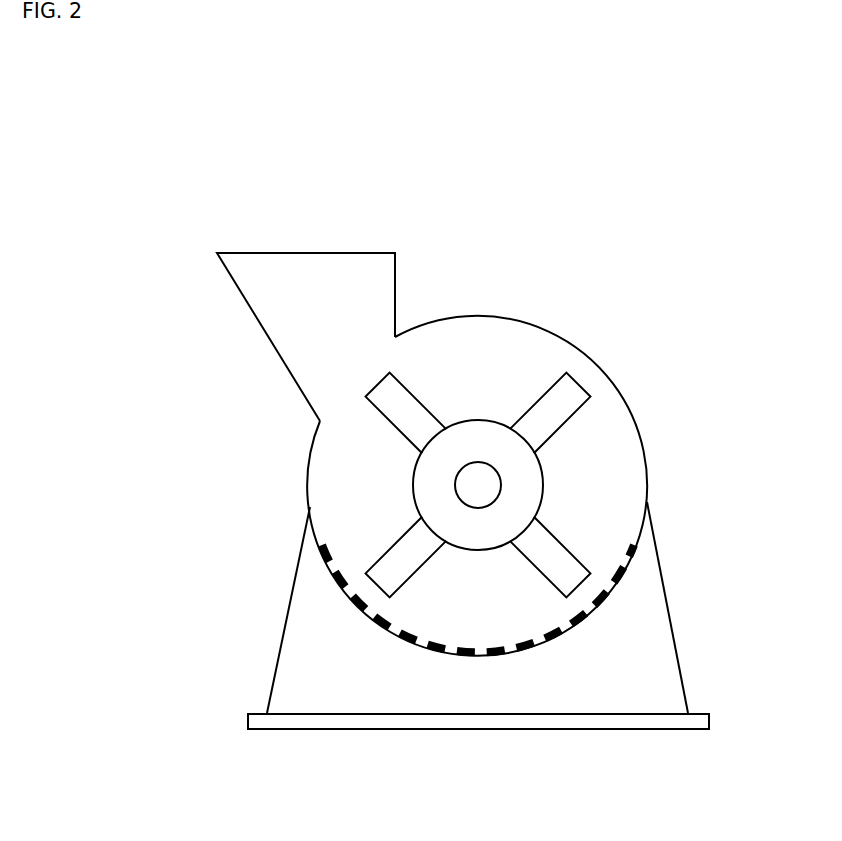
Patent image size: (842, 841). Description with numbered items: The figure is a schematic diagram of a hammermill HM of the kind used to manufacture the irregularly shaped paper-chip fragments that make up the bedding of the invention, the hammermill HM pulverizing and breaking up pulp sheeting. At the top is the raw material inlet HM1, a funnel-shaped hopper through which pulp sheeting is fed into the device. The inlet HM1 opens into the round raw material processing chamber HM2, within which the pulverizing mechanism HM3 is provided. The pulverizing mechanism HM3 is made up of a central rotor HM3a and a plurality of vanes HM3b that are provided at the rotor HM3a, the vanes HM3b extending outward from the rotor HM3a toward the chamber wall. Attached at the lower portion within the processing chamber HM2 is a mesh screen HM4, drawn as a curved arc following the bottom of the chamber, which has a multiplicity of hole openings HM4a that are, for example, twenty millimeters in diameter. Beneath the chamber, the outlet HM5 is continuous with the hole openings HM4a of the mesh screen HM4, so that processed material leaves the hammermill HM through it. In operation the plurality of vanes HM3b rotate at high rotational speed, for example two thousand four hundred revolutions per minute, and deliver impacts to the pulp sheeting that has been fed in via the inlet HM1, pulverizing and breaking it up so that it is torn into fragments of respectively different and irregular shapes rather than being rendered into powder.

The hammermill HM is at (460, 157).
The raw material inlet HM1 is at (288, 252).
The raw material processing chamber HM2 is at (552, 331).
The pulverizing mechanism HM3 is at (675, 322).
The rotor HM3a is at (523, 487).
The vanes HM3b is at (568, 400).
The mesh screen HM4 is at (527, 652).
The hole openings HM4a is at (510, 657).
The outlet HM5 is at (342, 730).